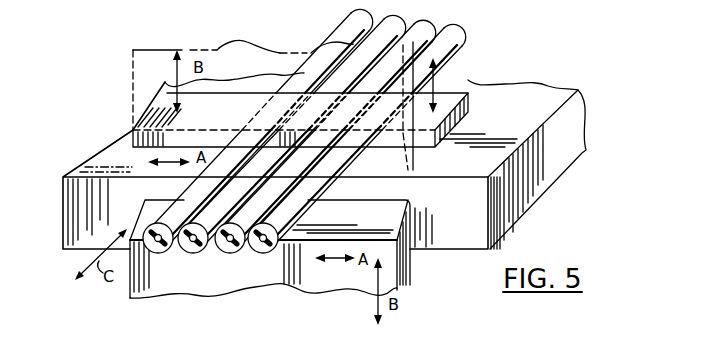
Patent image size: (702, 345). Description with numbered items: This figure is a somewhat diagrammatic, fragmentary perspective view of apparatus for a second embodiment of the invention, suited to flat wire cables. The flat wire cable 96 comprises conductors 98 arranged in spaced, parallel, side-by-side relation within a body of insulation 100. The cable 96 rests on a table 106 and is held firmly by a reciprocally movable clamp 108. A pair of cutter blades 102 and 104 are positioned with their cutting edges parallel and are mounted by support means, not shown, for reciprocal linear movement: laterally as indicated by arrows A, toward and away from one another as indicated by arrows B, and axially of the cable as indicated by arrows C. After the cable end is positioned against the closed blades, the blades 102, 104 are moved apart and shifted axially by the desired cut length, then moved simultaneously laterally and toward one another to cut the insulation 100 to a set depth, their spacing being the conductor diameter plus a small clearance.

The flat wire cable 96 is at (474, 14).
The conductors 98 is at (160, 252).
The insulation 100 is at (351, 28).
The cutter blade 102 is at (392, 264).
The cutter blade 104 is at (147, 60).
The table 106 is at (546, 100).
The clamp 108 is at (468, 80).